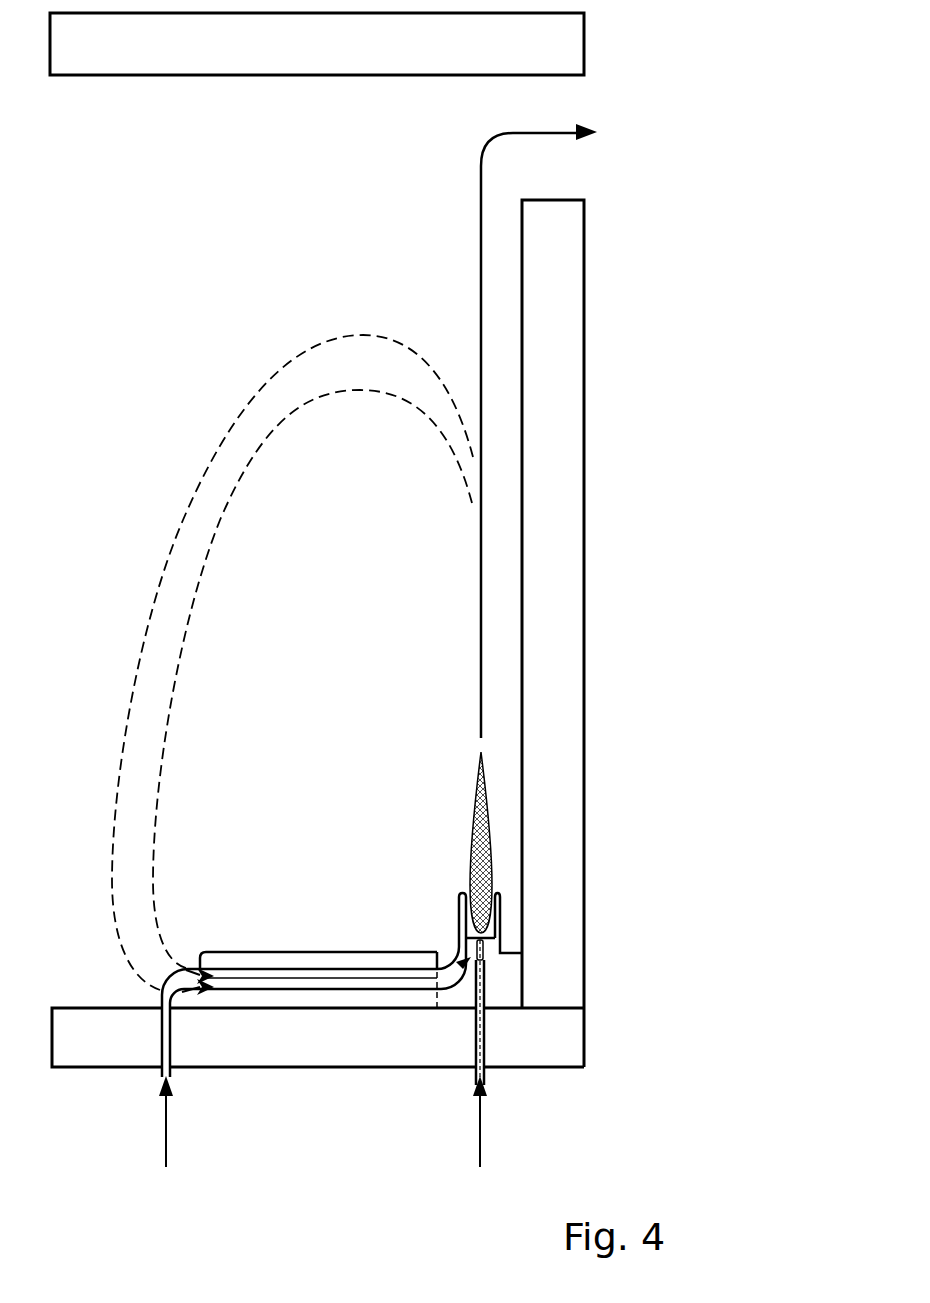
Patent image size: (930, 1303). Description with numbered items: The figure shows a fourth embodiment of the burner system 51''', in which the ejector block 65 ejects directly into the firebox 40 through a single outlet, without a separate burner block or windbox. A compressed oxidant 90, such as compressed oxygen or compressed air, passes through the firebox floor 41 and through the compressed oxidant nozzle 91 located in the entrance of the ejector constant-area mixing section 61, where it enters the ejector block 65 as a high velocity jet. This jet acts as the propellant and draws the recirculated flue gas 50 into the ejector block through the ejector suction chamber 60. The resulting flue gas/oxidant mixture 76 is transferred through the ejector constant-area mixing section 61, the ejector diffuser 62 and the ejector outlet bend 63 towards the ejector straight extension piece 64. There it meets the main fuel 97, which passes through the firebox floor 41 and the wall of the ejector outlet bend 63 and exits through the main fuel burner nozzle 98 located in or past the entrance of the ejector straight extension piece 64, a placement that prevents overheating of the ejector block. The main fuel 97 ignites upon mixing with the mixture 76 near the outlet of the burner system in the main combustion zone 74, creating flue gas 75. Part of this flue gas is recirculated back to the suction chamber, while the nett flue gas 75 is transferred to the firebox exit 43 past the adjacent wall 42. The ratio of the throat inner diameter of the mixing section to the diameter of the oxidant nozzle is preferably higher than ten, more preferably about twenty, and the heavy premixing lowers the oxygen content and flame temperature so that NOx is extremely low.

The firebox 40 is at (604, 47).
The firebox floor 41 is at (297, 1045).
The side wall 42 is at (588, 803).
The firebox exit 43 is at (566, 172).
The recirculated flue gas 50 is at (153, 789).
The burner system 51''' is at (287, 845).
The ejector suction chamber 60 is at (200, 955).
The ejector constant-area mixing section 61 is at (298, 969).
The ejector diffuser 62 is at (376, 968).
The ejector outlet bend 63 is at (447, 949).
The ejector straight extension piece 64 is at (460, 912).
The ejector block 65 is at (248, 1002).
The main combustion zone 74 is at (476, 838).
The flue gas 75 is at (481, 243).
The flue gas/oxidant mixture 76 is at (254, 969).
The compressed oxidant 90 is at (162, 1141).
The compressed oxidant nozzle 91 is at (186, 972).
The main fuel 97 is at (478, 1141).
The main fuel burner nozzle 98 is at (486, 950).